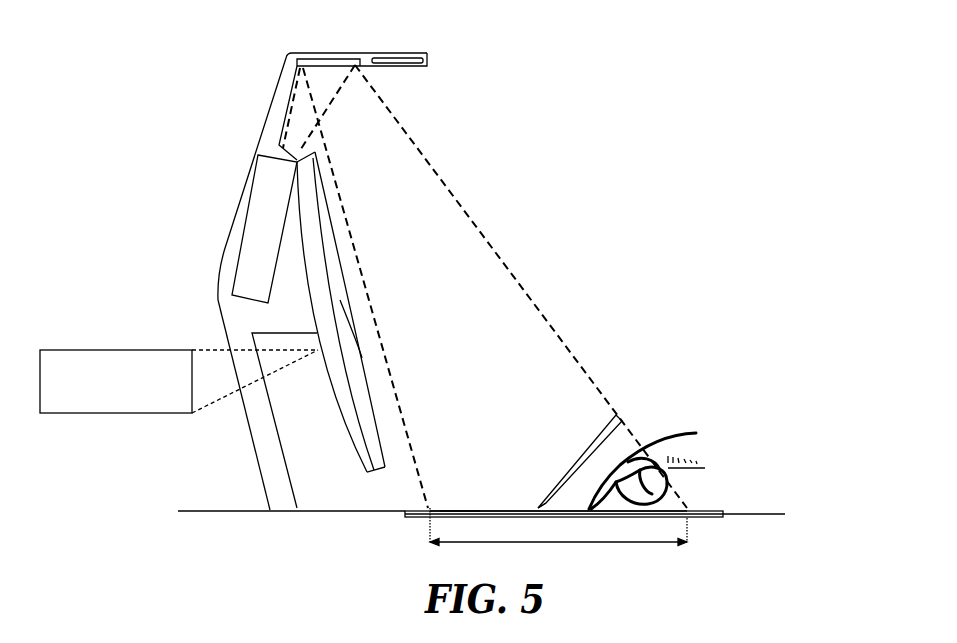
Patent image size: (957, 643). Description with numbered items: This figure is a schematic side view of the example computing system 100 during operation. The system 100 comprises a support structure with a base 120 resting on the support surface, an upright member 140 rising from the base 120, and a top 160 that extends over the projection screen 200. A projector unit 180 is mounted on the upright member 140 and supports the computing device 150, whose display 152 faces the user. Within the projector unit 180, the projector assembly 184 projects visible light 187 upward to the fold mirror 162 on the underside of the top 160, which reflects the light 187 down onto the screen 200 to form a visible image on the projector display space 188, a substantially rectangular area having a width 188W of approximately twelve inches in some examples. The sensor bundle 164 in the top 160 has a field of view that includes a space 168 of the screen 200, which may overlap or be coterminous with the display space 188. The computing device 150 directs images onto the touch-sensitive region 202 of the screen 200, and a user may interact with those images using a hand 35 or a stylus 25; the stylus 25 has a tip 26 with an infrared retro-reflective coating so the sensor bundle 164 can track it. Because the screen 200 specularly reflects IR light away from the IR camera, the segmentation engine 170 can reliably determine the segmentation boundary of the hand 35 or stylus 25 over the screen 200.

The computing system 100 is at (600, 168).
The base 120 is at (293, 517).
The upright member 140 is at (299, 287).
The computing device 150 is at (336, 393).
The display 152 is at (362, 358).
The top 160 is at (333, 40).
The fold mirror 162 is at (347, 53).
The sensor bundle 164 is at (397, 50).
The space 168 is at (523, 507).
The segmentation engine 170 is at (110, 415).
The projector unit 180 is at (243, 315).
The projector assembly 184 is at (254, 163).
The visible light 187 is at (400, 126).
The projector display space 188 is at (558, 395).
The width 188W is at (558, 539).
The projection screen 200 is at (718, 517).
The touch-sensitive region 202 is at (456, 510).
The stylus 25 is at (588, 448).
The tip 26 is at (541, 505).
The user's hand 35 is at (693, 433).